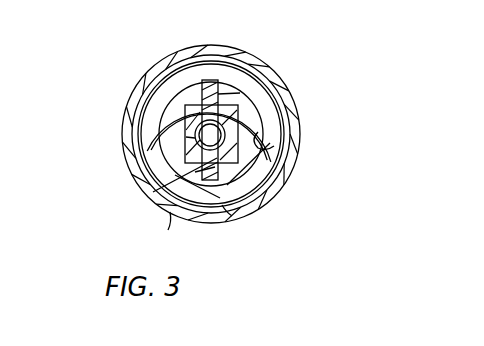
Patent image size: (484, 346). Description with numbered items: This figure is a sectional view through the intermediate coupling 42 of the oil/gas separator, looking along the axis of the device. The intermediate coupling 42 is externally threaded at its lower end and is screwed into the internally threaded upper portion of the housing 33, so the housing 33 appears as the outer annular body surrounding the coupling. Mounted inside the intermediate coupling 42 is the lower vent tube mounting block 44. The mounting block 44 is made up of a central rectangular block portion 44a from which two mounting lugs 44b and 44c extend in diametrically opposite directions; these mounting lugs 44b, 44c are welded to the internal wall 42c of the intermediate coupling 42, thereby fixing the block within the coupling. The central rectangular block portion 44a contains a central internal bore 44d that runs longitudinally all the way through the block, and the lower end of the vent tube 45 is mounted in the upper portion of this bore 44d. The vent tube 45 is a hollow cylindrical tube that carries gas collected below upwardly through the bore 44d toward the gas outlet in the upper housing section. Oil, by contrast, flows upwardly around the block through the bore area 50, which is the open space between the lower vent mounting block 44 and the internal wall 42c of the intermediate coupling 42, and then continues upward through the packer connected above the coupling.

The housing 33 is at (240, 56).
The intermediate coupling 42 is at (170, 62).
The internal wall 42c is at (263, 142).
The lower vent tube mounting block 44 is at (238, 122).
The central rectangular block portion 44a is at (215, 167).
The mounting lug 44b is at (240, 93).
The mounting lug 44c is at (232, 216).
The central internal bore 44d is at (195, 138).
The vent tube 45 is at (207, 62).
The bore area 50 is at (168, 230).